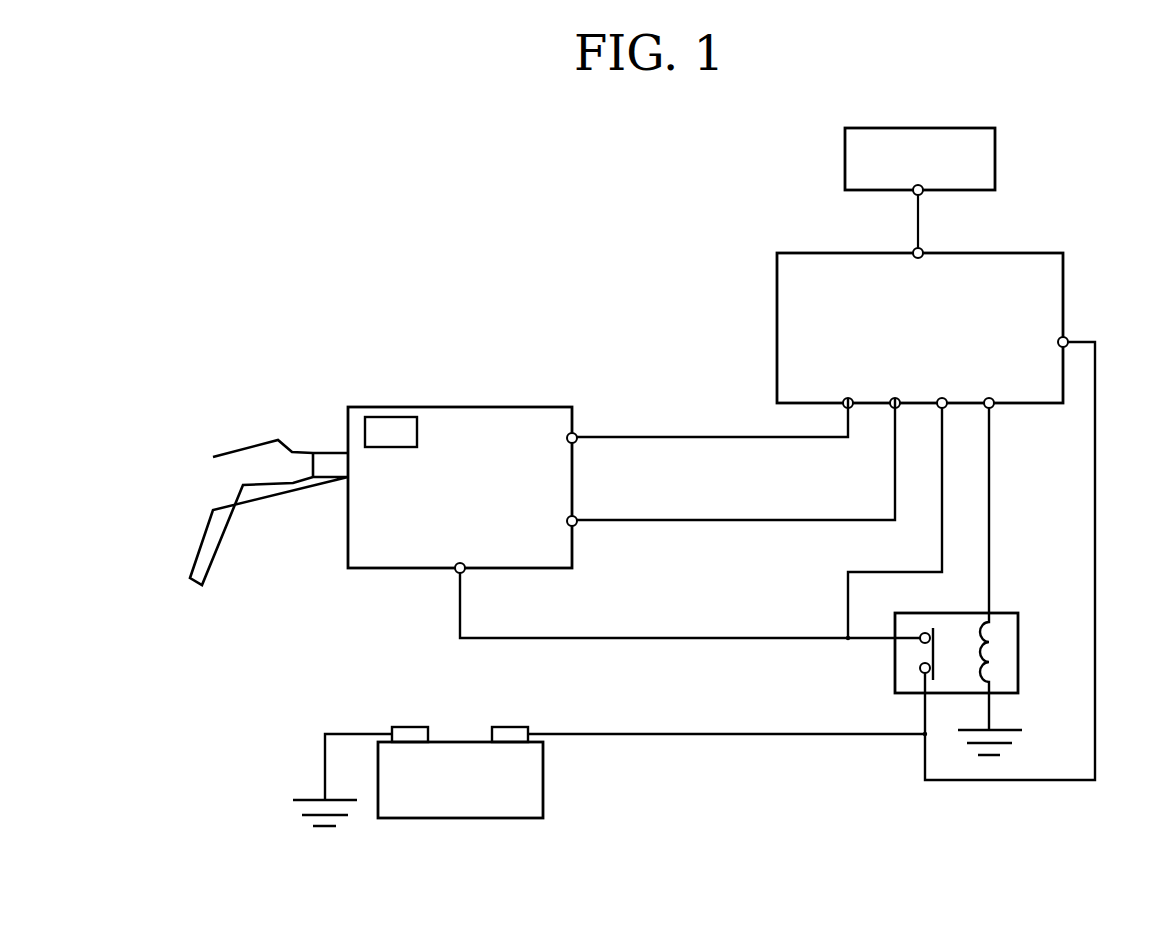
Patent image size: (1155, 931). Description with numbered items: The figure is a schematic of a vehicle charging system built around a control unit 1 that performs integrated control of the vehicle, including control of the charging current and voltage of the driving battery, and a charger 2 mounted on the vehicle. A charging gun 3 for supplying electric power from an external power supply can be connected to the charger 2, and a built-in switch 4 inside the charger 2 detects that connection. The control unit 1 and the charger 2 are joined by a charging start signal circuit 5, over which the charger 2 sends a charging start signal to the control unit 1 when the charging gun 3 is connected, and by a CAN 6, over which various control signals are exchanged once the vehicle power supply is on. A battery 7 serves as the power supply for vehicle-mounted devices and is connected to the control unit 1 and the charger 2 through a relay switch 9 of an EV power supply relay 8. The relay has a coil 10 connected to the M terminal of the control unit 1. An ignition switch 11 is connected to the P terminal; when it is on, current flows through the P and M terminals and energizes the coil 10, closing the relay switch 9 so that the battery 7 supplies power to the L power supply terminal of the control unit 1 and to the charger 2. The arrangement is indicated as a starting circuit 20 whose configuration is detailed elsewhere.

The control unit 1 is at (1063, 265).
The charger 2 is at (520, 407).
The charging gun 3 is at (252, 443).
The built-in switch 4 is at (381, 417).
The charging start signal circuit 5 is at (656, 437).
The CAN 6 is at (657, 520).
The battery 7 is at (543, 780).
The EV power supply relay 8 is at (963, 653).
The relay switch 9 is at (925, 655).
The coil 10 is at (1003, 663).
The ignition switch 11 is at (995, 132).
The starting circuit 20 is at (722, 405).